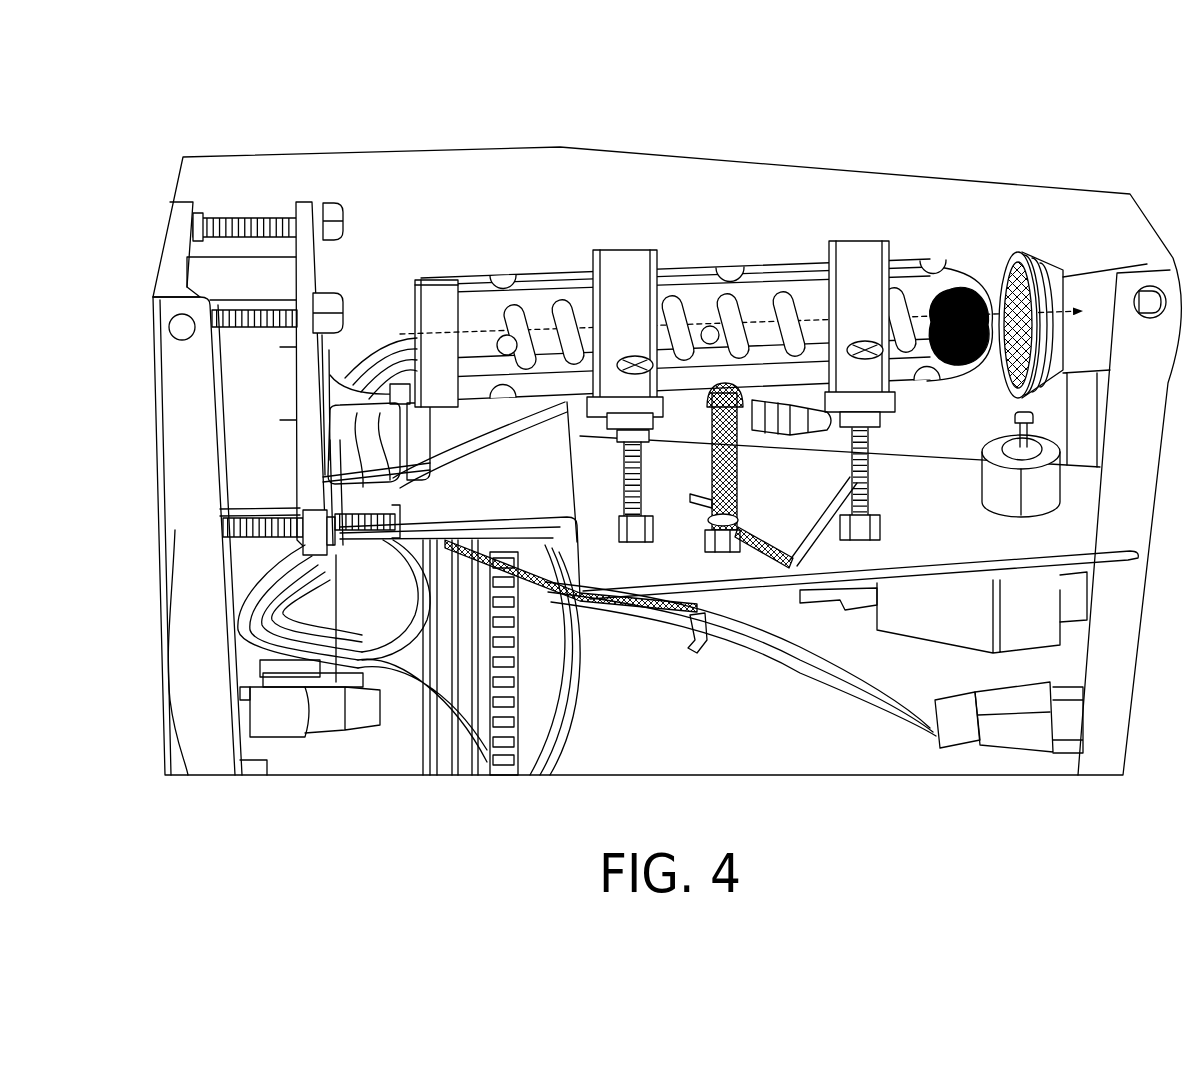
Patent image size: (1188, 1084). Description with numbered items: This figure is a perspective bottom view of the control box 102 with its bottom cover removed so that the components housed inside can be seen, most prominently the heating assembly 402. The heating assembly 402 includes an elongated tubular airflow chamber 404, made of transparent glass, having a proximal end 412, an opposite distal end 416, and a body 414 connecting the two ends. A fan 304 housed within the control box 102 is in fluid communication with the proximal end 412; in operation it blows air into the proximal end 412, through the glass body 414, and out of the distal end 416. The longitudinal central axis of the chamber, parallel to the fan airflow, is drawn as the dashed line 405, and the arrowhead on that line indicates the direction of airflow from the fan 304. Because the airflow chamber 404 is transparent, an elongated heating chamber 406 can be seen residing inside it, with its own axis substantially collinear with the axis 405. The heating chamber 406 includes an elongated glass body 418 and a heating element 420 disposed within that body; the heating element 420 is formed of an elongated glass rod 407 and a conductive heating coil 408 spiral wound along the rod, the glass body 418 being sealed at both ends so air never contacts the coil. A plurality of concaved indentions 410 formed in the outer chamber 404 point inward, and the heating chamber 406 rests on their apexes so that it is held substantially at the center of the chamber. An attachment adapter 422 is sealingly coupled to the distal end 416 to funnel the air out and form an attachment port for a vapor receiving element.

The control box 102 is at (934, 86).
The fan 304 is at (270, 283).
The heating assembly 402 is at (532, 257).
The elongated tubular airflow chamber 404 is at (677, 270).
The longitudinal central axis 405 is at (963, 358).
The elongated heating chamber 406 is at (912, 268).
The elongated glass rod 407 is at (822, 272).
The heating coil 408 is at (791, 290).
The concaved indentions 410 is at (505, 280).
The proximal end 412 is at (418, 431).
The body 414 is at (789, 401).
The distal end 416 is at (996, 408).
The elongated glass body 418 is at (1007, 248).
The heating element 420 is at (760, 290).
The attachment adapter 422 is at (1077, 297).